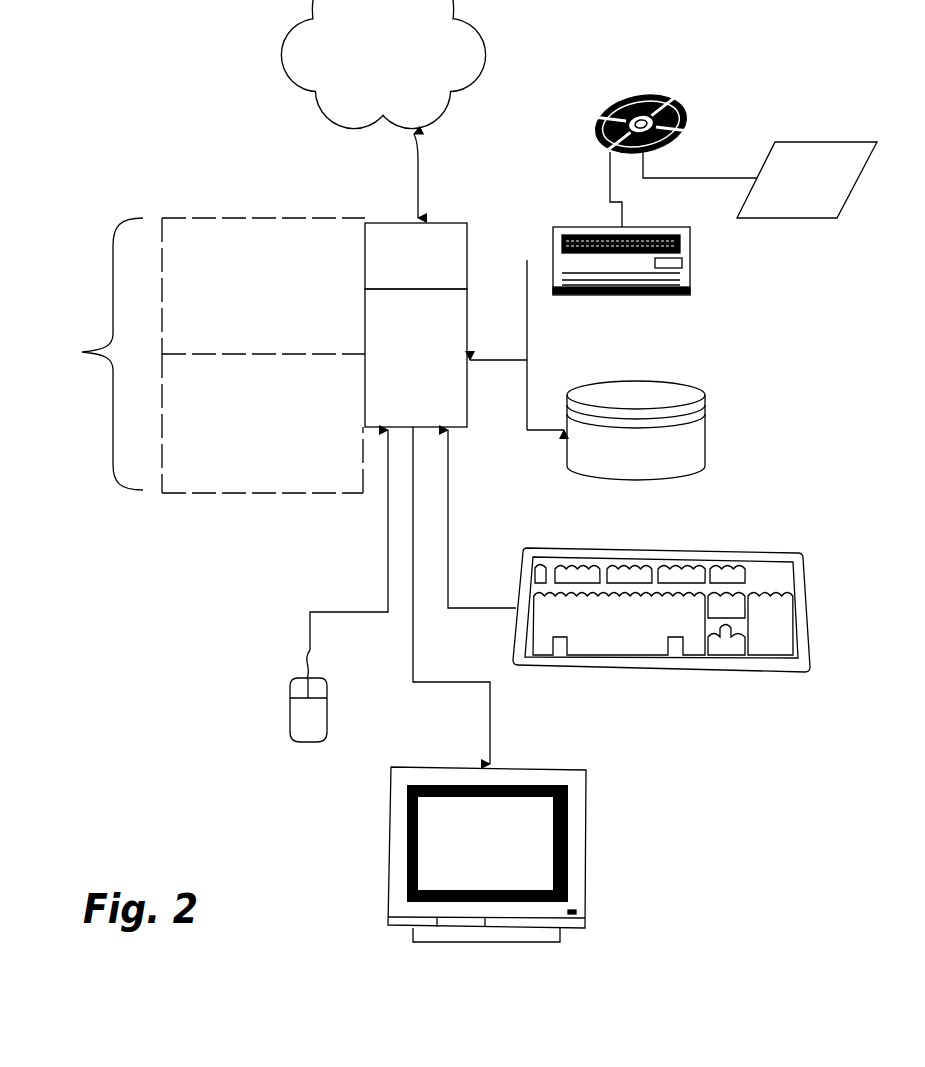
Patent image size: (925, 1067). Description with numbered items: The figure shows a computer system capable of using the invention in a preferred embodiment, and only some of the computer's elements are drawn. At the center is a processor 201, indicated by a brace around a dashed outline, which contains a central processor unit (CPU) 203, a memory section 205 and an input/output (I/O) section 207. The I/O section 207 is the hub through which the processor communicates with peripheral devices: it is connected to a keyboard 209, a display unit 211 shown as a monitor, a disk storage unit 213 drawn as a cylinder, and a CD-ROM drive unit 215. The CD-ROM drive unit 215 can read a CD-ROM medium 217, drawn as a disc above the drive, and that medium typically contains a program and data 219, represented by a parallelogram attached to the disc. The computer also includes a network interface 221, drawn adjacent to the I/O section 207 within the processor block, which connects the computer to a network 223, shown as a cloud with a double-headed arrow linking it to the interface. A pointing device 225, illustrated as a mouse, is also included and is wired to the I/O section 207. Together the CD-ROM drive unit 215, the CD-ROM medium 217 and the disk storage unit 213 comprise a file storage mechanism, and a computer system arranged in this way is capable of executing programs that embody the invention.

The processor 201 is at (82, 352).
The central processor unit 203 is at (263, 286).
The memory section 205 is at (262, 423).
The input/output section 207 is at (416, 358).
The keyboard 209 is at (811, 612).
The display unit 211 is at (586, 855).
The disk storage unit 213 is at (636, 430).
The CD-ROM drive unit 215 is at (690, 264).
The CD-ROM medium 217 is at (687, 112).
The program and data 219 is at (807, 180).
The network interface 221 is at (416, 256).
The network 223 is at (383, 64).
The pointing device 225 is at (290, 697).